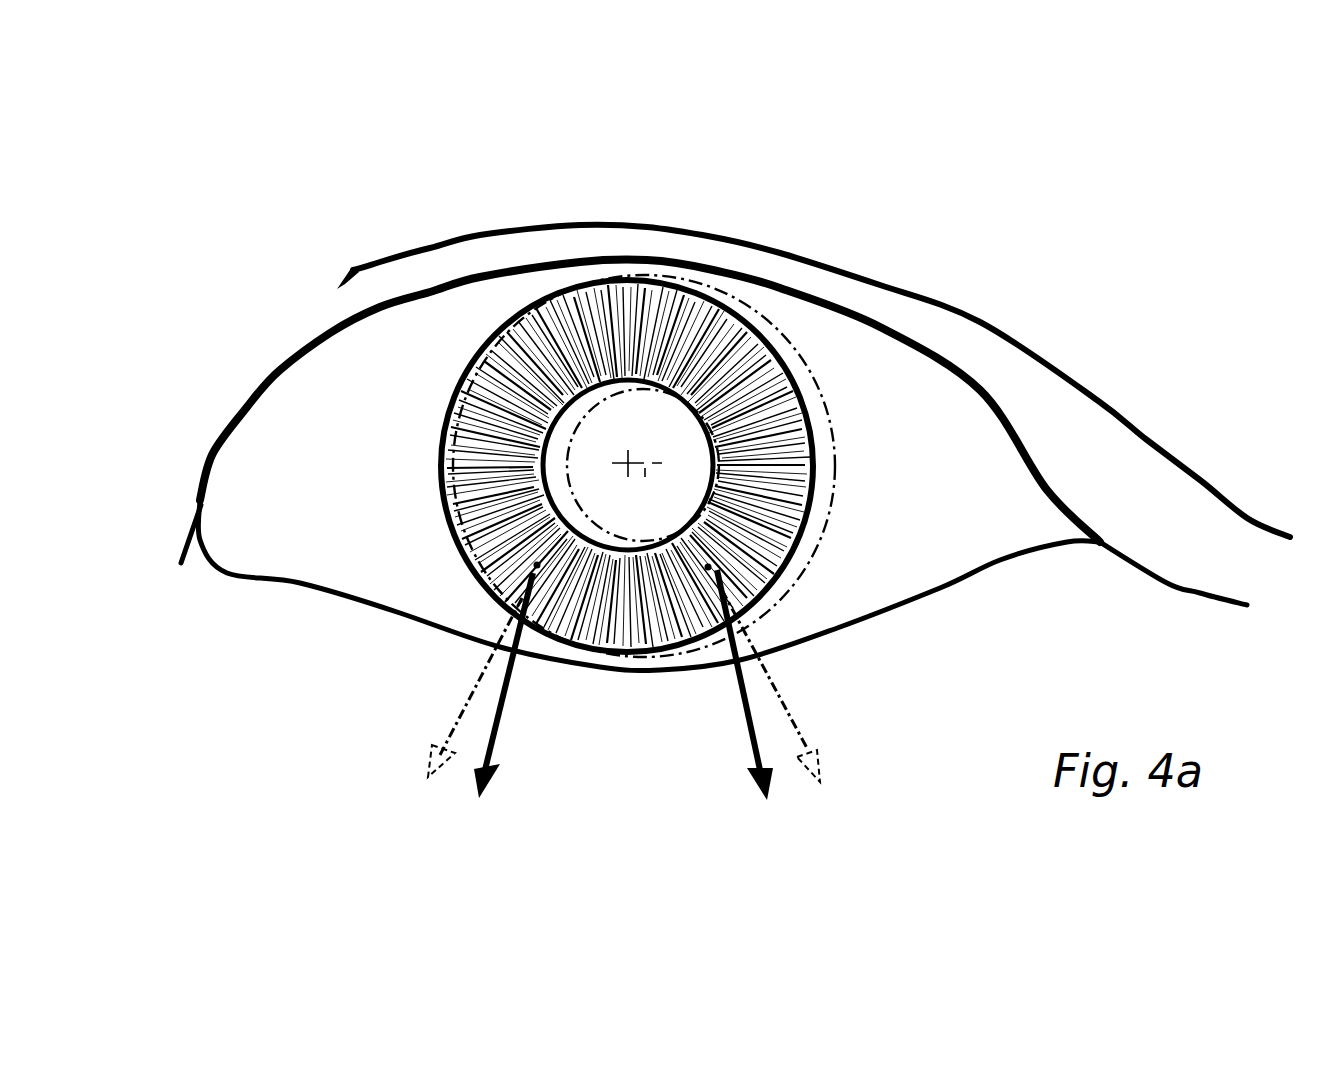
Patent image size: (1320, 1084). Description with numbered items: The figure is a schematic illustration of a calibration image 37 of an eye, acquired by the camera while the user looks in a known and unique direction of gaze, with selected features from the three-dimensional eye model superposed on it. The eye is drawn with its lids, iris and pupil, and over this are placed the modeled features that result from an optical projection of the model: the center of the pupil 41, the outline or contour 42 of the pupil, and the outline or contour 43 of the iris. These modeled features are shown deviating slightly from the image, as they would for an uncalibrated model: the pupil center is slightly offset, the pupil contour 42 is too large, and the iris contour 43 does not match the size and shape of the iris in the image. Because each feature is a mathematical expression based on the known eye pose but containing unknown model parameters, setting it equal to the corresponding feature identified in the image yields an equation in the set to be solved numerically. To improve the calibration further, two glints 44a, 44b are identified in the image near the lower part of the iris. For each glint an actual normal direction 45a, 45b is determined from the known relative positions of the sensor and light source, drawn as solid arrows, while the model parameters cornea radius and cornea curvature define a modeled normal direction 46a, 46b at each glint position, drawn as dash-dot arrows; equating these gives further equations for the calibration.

The calibration image 37 is at (183, 476).
The center of the pupil 41 is at (645, 455).
The outline or contour of the pupil 42 is at (700, 410).
The outline or contour of the iris 43 is at (800, 358).
The glint 44a is at (537, 565).
The glint 44b is at (708, 567).
The normal direction 45a is at (498, 740).
The normal direction 45b is at (747, 750).
The modeled normal direction 46a is at (450, 730).
The modeled normal direction 46b is at (800, 733).